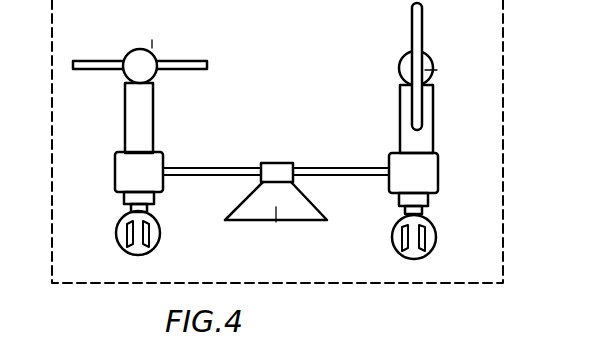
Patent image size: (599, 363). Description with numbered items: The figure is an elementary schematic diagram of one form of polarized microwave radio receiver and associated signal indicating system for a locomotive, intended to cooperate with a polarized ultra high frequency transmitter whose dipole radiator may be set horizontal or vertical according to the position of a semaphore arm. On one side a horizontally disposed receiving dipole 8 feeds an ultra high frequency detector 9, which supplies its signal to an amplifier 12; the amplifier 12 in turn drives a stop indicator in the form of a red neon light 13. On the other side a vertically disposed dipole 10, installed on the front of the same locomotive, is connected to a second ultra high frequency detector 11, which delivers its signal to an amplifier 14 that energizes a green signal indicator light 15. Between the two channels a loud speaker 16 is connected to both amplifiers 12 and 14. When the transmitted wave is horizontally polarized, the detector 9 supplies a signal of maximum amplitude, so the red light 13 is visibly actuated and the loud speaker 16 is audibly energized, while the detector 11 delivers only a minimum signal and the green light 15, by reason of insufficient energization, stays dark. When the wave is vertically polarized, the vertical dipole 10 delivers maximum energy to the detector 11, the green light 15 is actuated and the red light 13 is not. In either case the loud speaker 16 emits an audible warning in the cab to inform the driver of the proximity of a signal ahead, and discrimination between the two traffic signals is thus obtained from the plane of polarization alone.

The horizontally disposed receiving dipole 8 is at (194, 62).
The ultra high frequency detector 9 is at (141, 66).
The vertically disposed dipole 10 is at (410, 114).
The ultra high frequency detector 11 is at (406, 66).
The amplifier 12 is at (157, 154).
The red neon light 13 is at (150, 236).
The amplifier 14 is at (438, 184).
The green signal indicator light 15 is at (437, 241).
The loud speaker 16 is at (272, 163).